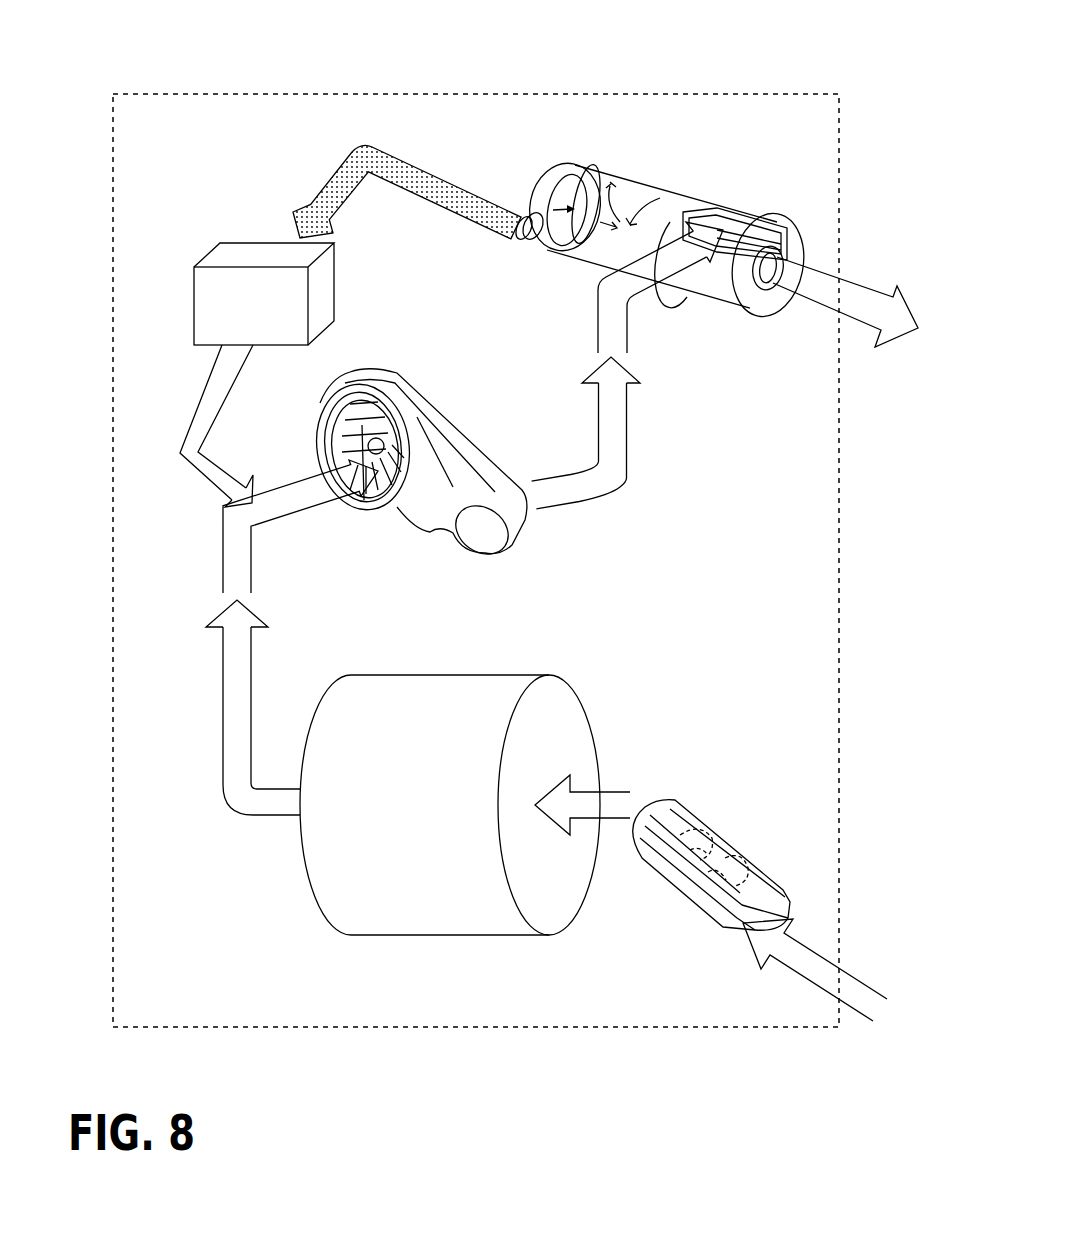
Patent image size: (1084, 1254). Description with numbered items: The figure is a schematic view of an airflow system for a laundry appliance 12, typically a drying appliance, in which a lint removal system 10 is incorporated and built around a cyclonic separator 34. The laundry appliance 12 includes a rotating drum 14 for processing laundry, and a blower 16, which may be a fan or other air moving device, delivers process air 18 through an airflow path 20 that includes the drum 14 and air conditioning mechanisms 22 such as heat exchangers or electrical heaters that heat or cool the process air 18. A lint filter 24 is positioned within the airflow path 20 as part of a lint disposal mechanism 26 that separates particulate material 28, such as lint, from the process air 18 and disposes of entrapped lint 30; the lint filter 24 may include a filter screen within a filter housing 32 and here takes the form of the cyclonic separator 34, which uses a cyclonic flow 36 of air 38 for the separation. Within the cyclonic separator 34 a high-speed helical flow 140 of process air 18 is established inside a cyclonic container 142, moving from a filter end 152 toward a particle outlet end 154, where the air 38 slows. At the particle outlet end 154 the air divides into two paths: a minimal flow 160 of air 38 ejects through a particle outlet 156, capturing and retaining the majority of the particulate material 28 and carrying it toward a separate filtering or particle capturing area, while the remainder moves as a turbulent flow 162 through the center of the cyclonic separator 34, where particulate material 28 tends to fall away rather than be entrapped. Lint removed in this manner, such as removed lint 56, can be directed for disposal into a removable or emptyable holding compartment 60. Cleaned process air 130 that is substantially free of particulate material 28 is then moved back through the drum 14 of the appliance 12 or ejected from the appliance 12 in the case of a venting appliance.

The lint removal system 10 is at (655, 133).
The laundry appliance 12 is at (103, 580).
The rotating drum 14 is at (442, 892).
The blower 16 is at (502, 561).
The process air 18 is at (627, 458).
The airflow path 20 is at (597, 500).
The air conditioning mechanisms 22 is at (715, 815).
The lint filter 24 is at (780, 215).
The lint disposal mechanism 26 is at (234, 232).
The particulate material 28 is at (613, 407).
The entrapped lint 30 is at (410, 150).
The filter housing 32 is at (832, 243).
The cyclonic separator 34 is at (775, 297).
The cyclonic flow 36 is at (577, 168).
The air 38 is at (573, 233).
The removed lint 56 is at (310, 204).
The holding compartment 60 is at (186, 305).
The cleaned process air 130 is at (867, 302).
The helical flow 140 is at (623, 172).
The cyclonic container 142 is at (657, 187).
The filter end 152 is at (717, 212).
The particle outlet end 154 is at (550, 185).
The particle outlet 156 is at (533, 240).
The minimal flow 160 is at (380, 150).
The turbulent flow 162 is at (597, 217).